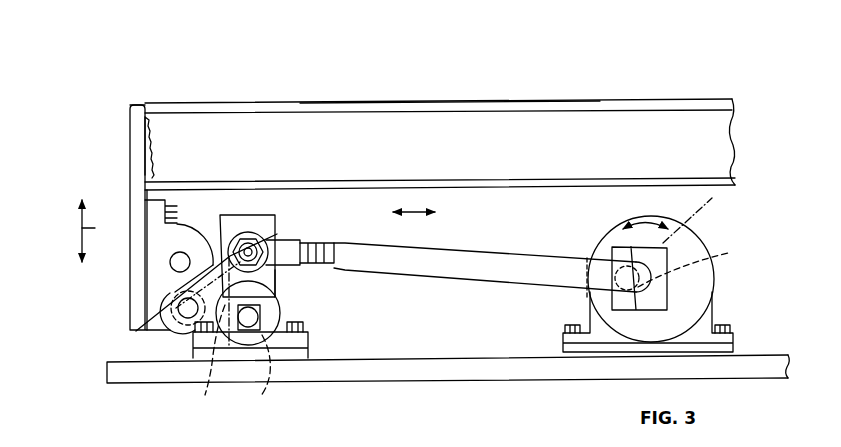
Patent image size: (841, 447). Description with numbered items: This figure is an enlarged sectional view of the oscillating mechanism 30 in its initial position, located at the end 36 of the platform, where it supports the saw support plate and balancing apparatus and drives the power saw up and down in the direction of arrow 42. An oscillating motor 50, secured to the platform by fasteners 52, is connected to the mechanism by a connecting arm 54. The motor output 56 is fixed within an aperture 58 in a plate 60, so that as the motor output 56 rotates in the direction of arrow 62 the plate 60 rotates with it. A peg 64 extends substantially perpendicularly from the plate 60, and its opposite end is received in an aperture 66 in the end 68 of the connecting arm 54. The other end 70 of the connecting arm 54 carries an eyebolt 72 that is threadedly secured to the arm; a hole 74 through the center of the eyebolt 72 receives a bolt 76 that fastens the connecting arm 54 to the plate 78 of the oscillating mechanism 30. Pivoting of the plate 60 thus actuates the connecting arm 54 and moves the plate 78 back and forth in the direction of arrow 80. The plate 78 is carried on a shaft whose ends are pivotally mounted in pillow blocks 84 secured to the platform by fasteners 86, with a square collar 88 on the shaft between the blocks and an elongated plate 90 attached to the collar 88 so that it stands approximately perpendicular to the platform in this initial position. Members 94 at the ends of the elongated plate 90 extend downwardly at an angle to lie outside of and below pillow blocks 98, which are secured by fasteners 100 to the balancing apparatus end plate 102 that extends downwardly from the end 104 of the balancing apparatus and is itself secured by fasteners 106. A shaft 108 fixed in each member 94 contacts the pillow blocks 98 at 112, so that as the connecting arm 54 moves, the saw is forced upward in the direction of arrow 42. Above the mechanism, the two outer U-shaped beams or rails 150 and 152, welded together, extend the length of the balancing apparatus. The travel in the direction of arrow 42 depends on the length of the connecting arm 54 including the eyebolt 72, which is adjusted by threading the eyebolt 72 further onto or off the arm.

The oscillating mechanism 30 is at (290, 230).
The end of platform 36 is at (106, 374).
The arrow 42 is at (100, 231).
The oscillating motor 50 is at (712, 247).
The fasteners 52 is at (730, 333).
The connecting arm 54 is at (500, 256).
The motor output 56 is at (705, 206).
The aperture 58 is at (728, 253).
The plate 60 is at (650, 298).
The arrow 62 is at (648, 222).
The peg 64 is at (600, 292).
The aperture 66 is at (639, 292).
The end of connecting arm 68 is at (635, 278).
The end of connecting arm 70 is at (304, 241).
The eyebolt 72 is at (274, 278).
The hole 74 is at (268, 233).
The bolt 76 is at (248, 230).
The plate 78 is at (228, 220).
The arrow 80 is at (415, 205).
The pillow blocks 84 is at (306, 358).
The fasteners 86 is at (304, 327).
The square collar 88 is at (257, 373).
The elongated plate 90 is at (206, 358).
The members 94 is at (178, 330).
The pillow blocks 98 is at (158, 278).
The fasteners 100 is at (171, 187).
The balancing apparatus end plate 102 is at (135, 120).
The end of balancing apparatus 104 is at (138, 103).
The fasteners 106 is at (148, 167).
The shaft 108 is at (171, 312).
The contact point 112 is at (170, 292).
The U-shaped beam or rail 150 is at (497, 126).
The U-shaped beam or rail 152 is at (625, 106).